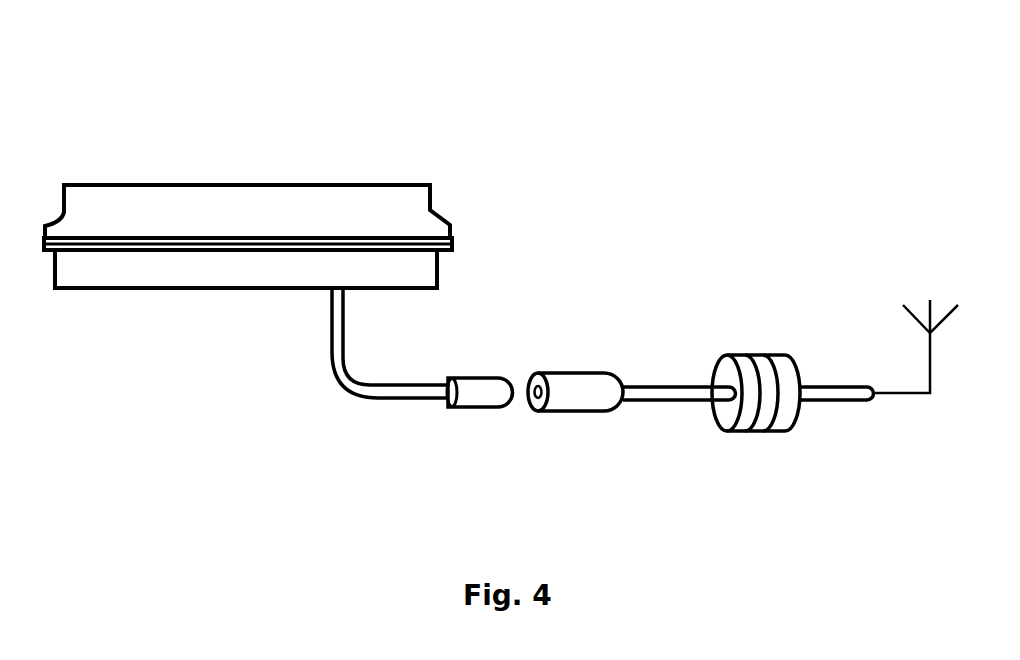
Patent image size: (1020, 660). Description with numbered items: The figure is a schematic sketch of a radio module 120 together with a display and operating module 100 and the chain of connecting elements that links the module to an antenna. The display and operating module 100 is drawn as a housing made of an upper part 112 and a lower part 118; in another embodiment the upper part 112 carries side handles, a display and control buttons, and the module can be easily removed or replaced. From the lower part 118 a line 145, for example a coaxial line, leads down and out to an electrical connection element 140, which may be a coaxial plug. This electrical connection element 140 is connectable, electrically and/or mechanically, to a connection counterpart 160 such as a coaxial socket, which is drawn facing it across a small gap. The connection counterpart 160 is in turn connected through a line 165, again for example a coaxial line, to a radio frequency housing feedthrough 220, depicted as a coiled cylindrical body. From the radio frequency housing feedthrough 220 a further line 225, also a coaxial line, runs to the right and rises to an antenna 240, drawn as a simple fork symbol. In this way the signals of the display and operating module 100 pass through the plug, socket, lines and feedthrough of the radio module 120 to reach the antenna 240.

The display and operating module 100 is at (290, 105).
The upper part 112 is at (173, 203).
The lower part 118 is at (193, 267).
The radio module 120 is at (455, 188).
The line 145 is at (332, 350).
The electrical connection element 140 is at (480, 397).
The connection counterpart 160 is at (568, 397).
The line 165 is at (673, 392).
The radio frequency housing feedthrough 220 is at (735, 336).
The line 225 is at (825, 393).
The antenna 240 is at (898, 276).